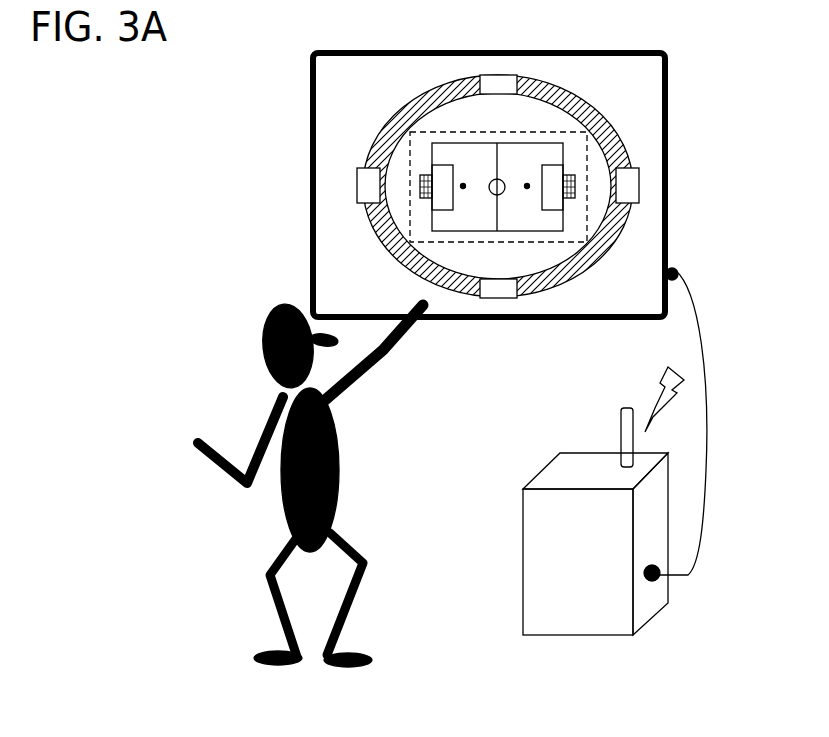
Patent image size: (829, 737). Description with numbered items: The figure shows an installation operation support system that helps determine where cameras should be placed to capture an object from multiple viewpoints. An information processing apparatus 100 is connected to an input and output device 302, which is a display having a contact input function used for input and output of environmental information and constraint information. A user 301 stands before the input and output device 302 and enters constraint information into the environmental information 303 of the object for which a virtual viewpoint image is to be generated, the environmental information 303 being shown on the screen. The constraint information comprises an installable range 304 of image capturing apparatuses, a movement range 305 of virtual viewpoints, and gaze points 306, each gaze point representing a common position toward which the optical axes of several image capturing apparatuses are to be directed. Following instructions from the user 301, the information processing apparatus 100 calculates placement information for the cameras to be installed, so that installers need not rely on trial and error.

The information processing apparatus 100 is at (597, 612).
The user 301 is at (268, 578).
The input and output device 302 is at (358, 49).
The environmental information 303 is at (473, 143).
The installable range 304 is at (528, 83).
The movement range 305 is at (572, 132).
The gaze points 306 is at (463, 190).